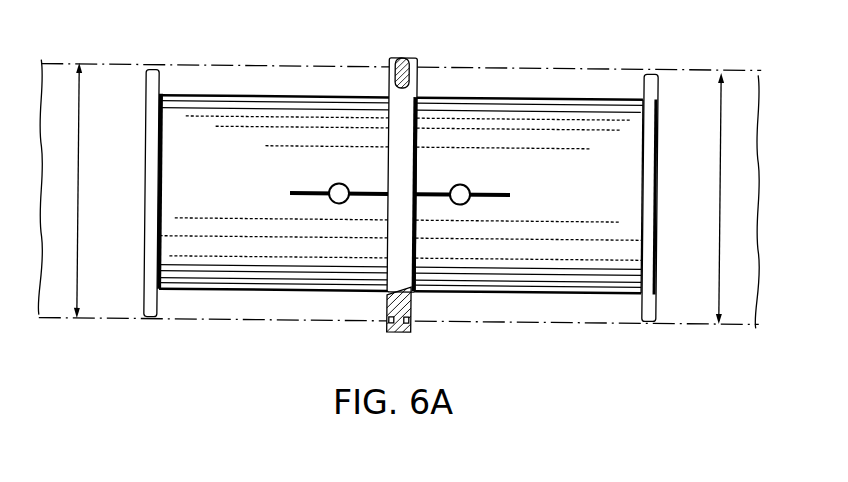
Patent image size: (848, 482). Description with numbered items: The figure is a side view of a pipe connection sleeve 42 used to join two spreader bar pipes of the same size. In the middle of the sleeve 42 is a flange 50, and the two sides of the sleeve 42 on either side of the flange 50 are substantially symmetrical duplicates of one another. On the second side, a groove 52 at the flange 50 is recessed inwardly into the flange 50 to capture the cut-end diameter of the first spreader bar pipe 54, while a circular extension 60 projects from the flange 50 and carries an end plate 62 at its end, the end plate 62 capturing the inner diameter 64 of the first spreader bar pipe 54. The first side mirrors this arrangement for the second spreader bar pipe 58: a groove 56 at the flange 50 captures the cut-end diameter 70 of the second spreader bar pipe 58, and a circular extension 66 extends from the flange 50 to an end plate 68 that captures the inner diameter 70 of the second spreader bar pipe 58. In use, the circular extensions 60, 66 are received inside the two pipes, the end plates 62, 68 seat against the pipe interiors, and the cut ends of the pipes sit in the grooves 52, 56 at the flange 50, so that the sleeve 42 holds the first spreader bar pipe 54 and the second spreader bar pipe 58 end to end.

The pipe connection sleeve 42 is at (420, 27).
The flange 50 is at (400, 55).
The groove 52 is at (413, 333).
The first spreader bar pipe 54 is at (546, 66).
The groove 56 is at (388, 333).
The second spreader bar pipe 58 is at (249, 66).
The circular extension 60 is at (628, 96).
The end plate 62 is at (658, 202).
The inner diameter 64 is at (719, 117).
The circular extension 66 is at (181, 94).
The end plate 68 is at (145, 193).
The inner diameter 70 is at (79, 120).